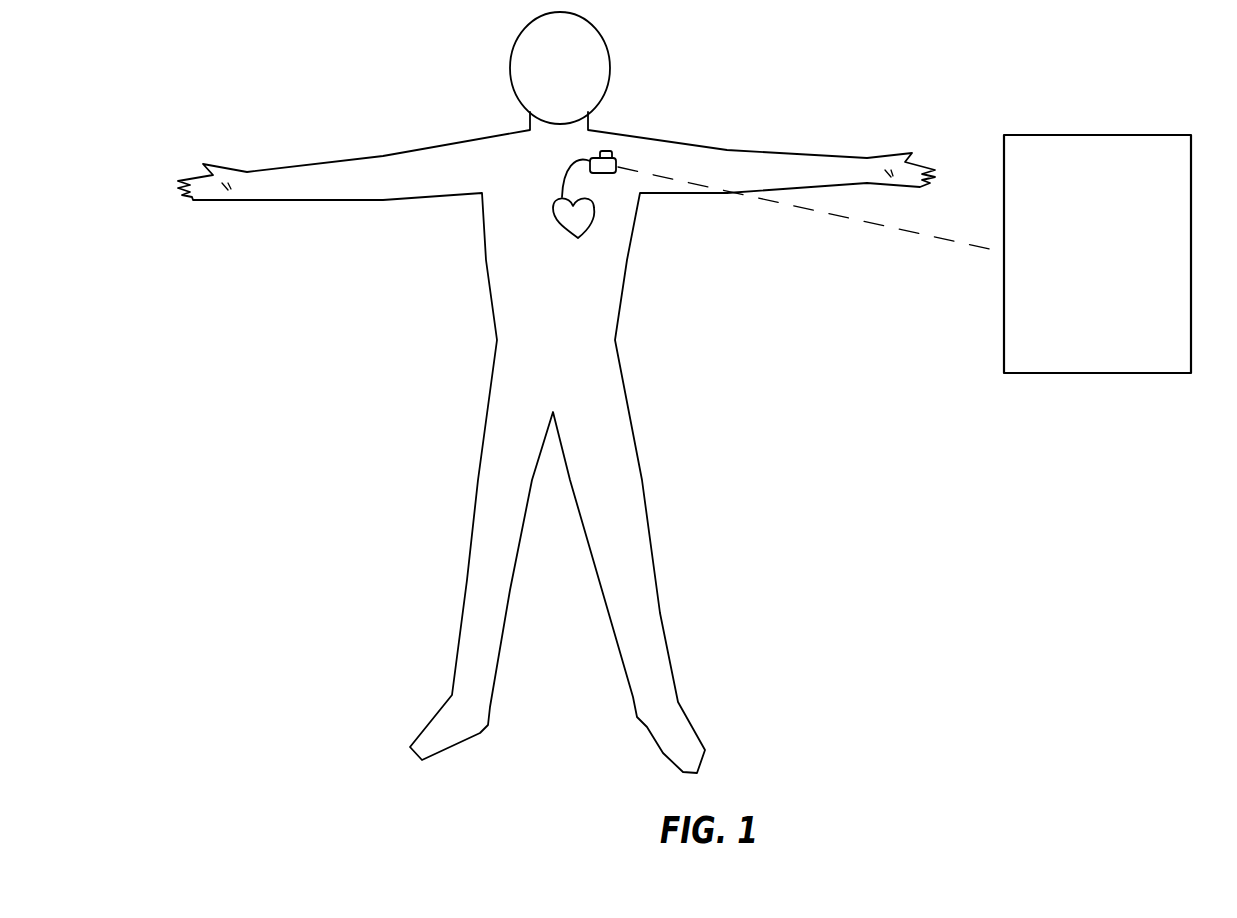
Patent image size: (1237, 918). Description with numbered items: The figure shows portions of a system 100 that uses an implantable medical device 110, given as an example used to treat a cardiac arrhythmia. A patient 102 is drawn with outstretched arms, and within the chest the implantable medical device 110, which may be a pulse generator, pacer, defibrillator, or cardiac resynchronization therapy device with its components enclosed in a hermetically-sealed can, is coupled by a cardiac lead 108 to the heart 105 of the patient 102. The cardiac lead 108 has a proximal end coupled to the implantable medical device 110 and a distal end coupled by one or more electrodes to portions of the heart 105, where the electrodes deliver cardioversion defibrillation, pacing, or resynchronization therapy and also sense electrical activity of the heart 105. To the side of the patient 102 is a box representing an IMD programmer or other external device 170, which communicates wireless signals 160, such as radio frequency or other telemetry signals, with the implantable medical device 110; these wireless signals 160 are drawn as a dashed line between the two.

The system 100 is at (1103, 726).
The patient 102 is at (498, 303).
The heart 105 is at (562, 228).
The cardiac lead 108 is at (567, 175).
The implantable medical device 110 is at (618, 167).
The wireless signals 160 is at (885, 227).
The external device 170 is at (1191, 182).